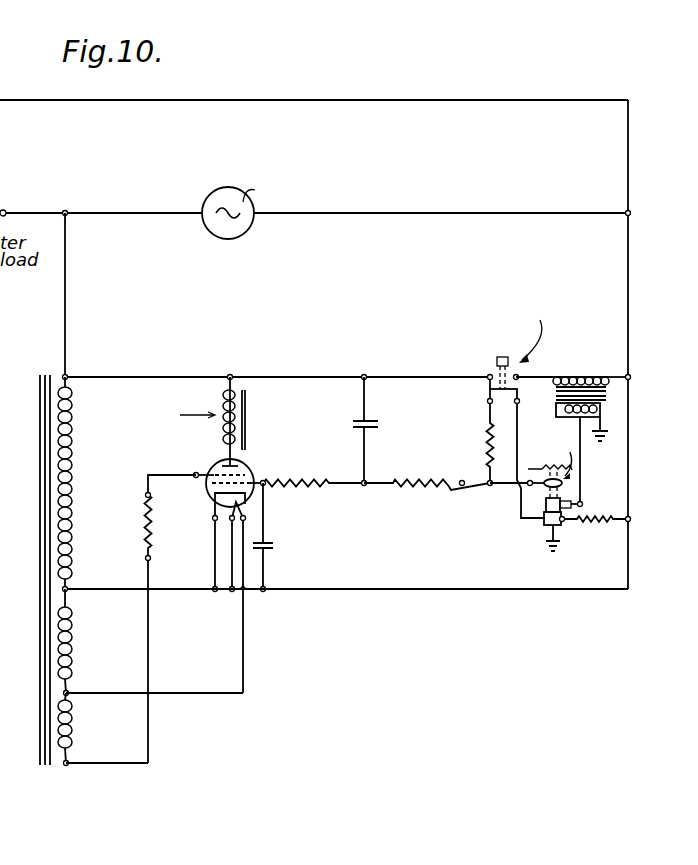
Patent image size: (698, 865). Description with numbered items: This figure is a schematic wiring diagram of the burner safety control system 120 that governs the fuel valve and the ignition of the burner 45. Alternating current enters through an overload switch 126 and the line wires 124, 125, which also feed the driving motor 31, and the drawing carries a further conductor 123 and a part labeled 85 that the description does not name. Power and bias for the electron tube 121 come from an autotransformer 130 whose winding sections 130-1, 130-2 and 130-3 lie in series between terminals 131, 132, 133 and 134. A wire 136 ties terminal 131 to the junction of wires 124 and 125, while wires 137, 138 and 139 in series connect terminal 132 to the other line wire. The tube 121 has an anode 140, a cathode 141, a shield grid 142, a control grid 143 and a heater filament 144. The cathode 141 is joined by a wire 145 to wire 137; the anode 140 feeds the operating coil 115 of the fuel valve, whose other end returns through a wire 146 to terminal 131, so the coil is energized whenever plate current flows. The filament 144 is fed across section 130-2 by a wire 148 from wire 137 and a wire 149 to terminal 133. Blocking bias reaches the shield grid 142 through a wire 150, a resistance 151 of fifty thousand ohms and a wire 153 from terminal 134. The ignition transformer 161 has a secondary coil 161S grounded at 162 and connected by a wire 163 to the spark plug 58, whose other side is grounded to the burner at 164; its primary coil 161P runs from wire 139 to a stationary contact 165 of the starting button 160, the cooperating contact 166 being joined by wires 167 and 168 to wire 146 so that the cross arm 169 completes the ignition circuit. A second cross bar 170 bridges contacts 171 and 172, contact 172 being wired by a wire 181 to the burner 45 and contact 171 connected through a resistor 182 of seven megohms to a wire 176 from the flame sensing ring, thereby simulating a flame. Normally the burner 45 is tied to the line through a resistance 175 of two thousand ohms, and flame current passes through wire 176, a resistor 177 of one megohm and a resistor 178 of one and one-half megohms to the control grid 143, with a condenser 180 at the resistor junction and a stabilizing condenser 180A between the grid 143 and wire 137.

The overload switch 126 is at (0, 200).
The wire 125 is at (30, 213).
The wire 124 is at (116, 206).
The driving motor 31 is at (243, 236).
The conductor 123 is at (431, 206).
The wire 139 is at (630, 266).
The wire 136 is at (68, 286).
The transformer terminal 131 is at (68, 345).
The wire 146 is at (190, 372).
The wire 168 is at (305, 362).
The wire 167 is at (395, 375).
The operating coil 115 is at (226, 428).
The shield grid 142 is at (212, 468).
The anode 140 is at (236, 466).
The control grid 143 is at (244, 478).
The heater filament 144 is at (251, 511).
The electron tube 121 is at (248, 512).
The cathode 141 is at (212, 508).
The wire 145 is at (214, 540).
The wire 148 is at (231, 560).
The burner safety control system 120 is at (258, 596).
The resistor 178 is at (316, 482).
The condenser 180 is at (357, 429).
The resistor 177 is at (428, 474).
The stabilizing condenser 180A is at (275, 547).
The conducting cross arm 169 is at (480, 372).
The stationary switch contact 165 is at (519, 374).
The starting button 160 is at (498, 357).
The stationary contact 166 is at (488, 378).
The conducting cross bar 170 is at (490, 390).
The stationary contact 171 is at (488, 402).
The stationary contact 172 is at (519, 400).
The wire 181 is at (518, 429).
The resistor 182 is at (488, 470).
The wire 176 is at (507, 484).
The primary coil 161P is at (555, 372).
The secondary coil 161S is at (609, 391).
The ignition transformer 161 is at (632, 377).
The wire 138 is at (601, 411).
The ground connection 162 is at (612, 437).
The wire 163 is at (582, 450).
The spark plug 58 is at (573, 500).
The burner 45 is at (544, 508).
The ground connection 164 is at (549, 550).
The resistance 175 is at (610, 518).
The flame electrode 85 is at (541, 466).
The wire 137 is at (433, 591).
The wire 153 is at (150, 474).
The resistance 151 is at (146, 510).
The wire 150 is at (150, 645).
The wire 149 is at (210, 695).
The autotransformer 130 is at (72, 417).
The transformer winding section 130-1 is at (73, 441).
The transformer terminal 132 is at (70, 592).
The transformer winding section 130-2 is at (73, 649).
The transformer terminal 133 is at (70, 697).
The transformer winding section 130-3 is at (73, 742).
The transformer terminal 134 is at (68, 766).